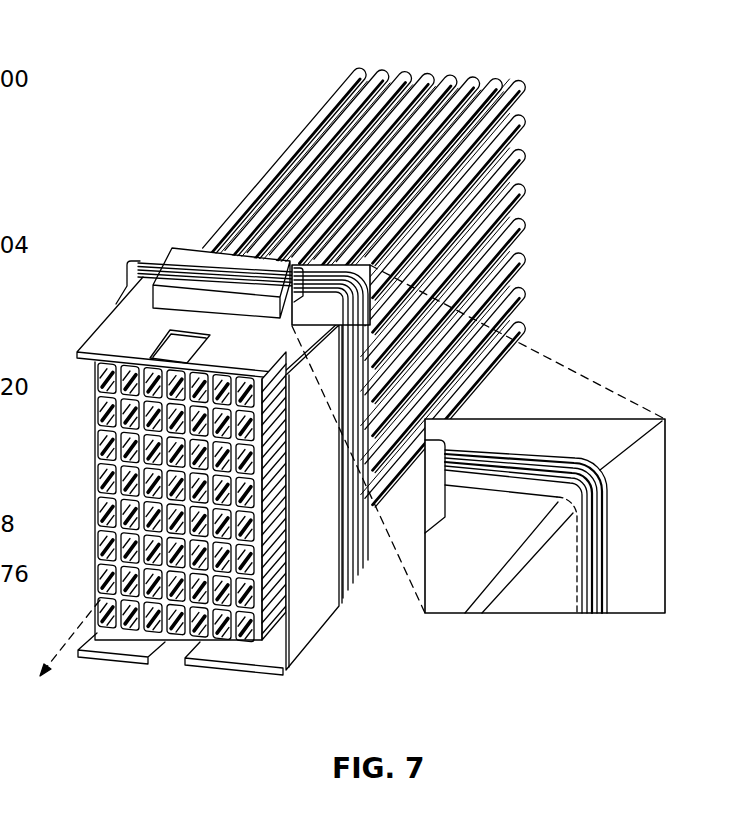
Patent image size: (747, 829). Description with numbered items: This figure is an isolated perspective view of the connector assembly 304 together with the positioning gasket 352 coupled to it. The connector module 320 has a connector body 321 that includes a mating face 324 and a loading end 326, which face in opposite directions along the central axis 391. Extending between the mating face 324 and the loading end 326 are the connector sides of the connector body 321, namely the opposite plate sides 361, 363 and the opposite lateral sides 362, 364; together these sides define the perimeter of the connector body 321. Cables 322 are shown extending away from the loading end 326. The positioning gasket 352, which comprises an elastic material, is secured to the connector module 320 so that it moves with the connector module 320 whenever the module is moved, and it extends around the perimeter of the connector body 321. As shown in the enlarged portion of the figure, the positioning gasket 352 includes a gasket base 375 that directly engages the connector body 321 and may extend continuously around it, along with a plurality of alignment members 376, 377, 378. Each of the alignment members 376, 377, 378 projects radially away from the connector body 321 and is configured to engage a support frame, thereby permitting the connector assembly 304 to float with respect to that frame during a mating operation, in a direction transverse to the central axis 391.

The connector assembly 304 is at (177, 128).
The connector module 320 is at (107, 296).
The connector body 321 is at (240, 337).
The cables 322 is at (492, 133).
The mating face 324 is at (170, 620).
The loading end 326 is at (390, 347).
The positioning gasket 352 is at (431, 429).
The plate side 361 is at (227, 320).
The lateral side 362 is at (307, 570).
The plate side 363 is at (275, 682).
The lateral side 364 is at (96, 411).
The gasket base 375 is at (572, 598).
The alignment member 376 is at (590, 612).
The alignment member 377 is at (604, 612).
The alignment member 378 is at (612, 518).
The central axis 391 is at (62, 650).